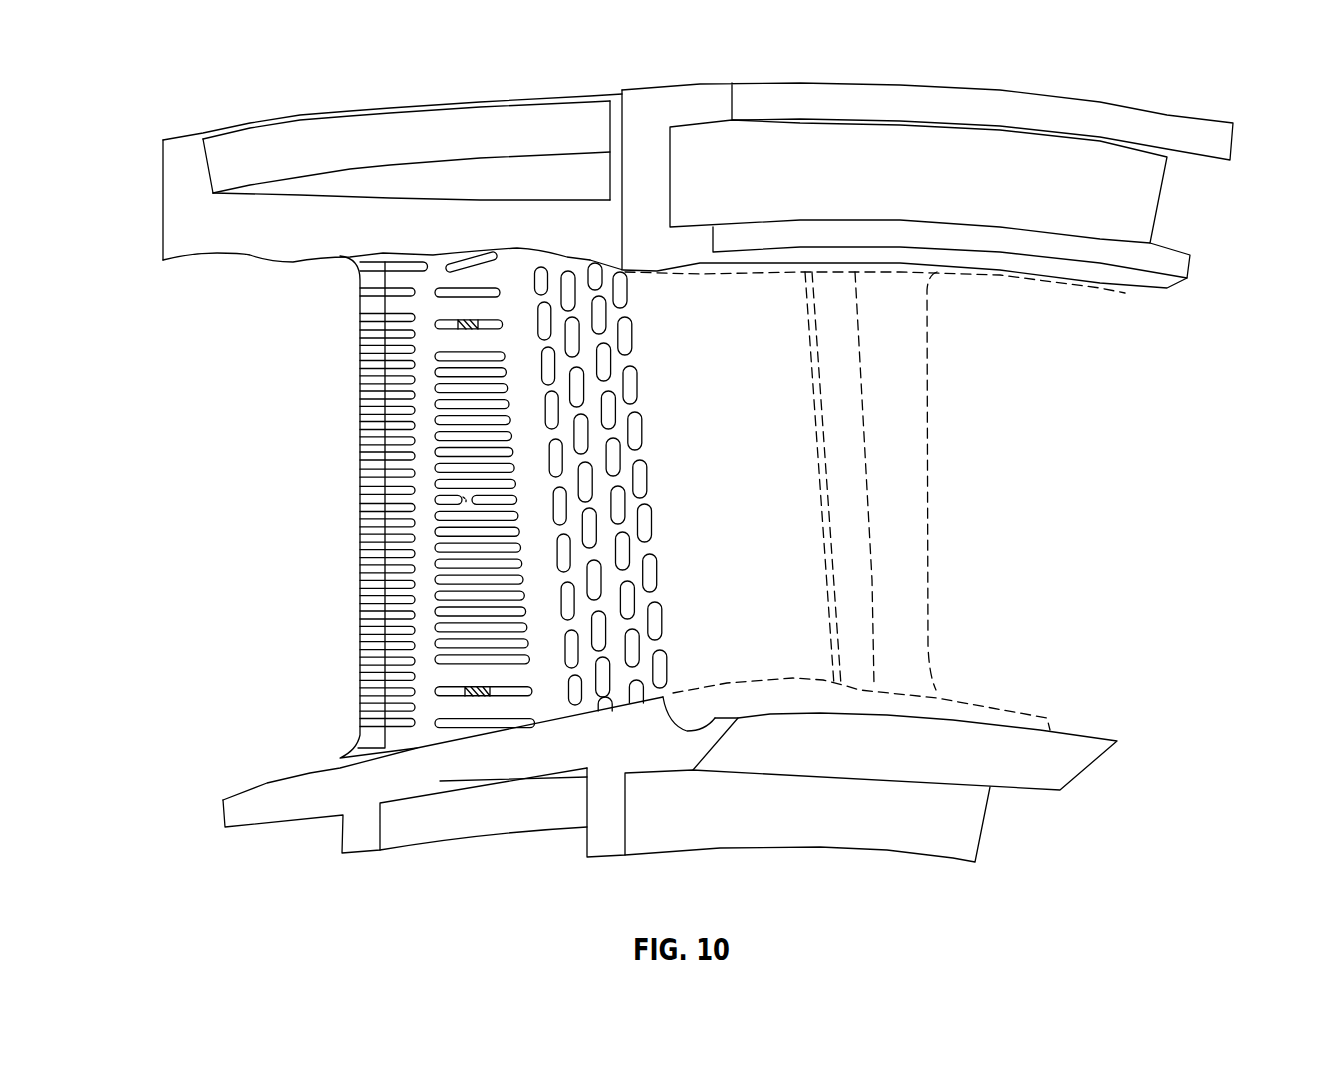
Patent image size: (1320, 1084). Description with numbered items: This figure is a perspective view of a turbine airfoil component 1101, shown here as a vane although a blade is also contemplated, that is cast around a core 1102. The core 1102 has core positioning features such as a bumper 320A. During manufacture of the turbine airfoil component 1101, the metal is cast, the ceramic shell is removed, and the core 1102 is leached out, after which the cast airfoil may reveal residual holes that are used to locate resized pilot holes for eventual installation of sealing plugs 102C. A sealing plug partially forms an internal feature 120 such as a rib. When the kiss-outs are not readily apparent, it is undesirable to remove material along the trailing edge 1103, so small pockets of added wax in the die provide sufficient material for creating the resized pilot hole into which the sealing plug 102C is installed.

The turbine airfoil component 1101 is at (523, 98).
The core 1102 is at (653, 335).
The trailing edge 1103 is at (335, 772).
The internal feature 120 is at (433, 420).
The bumper 320A is at (458, 499).
The sealing plug 102C is at (470, 318).